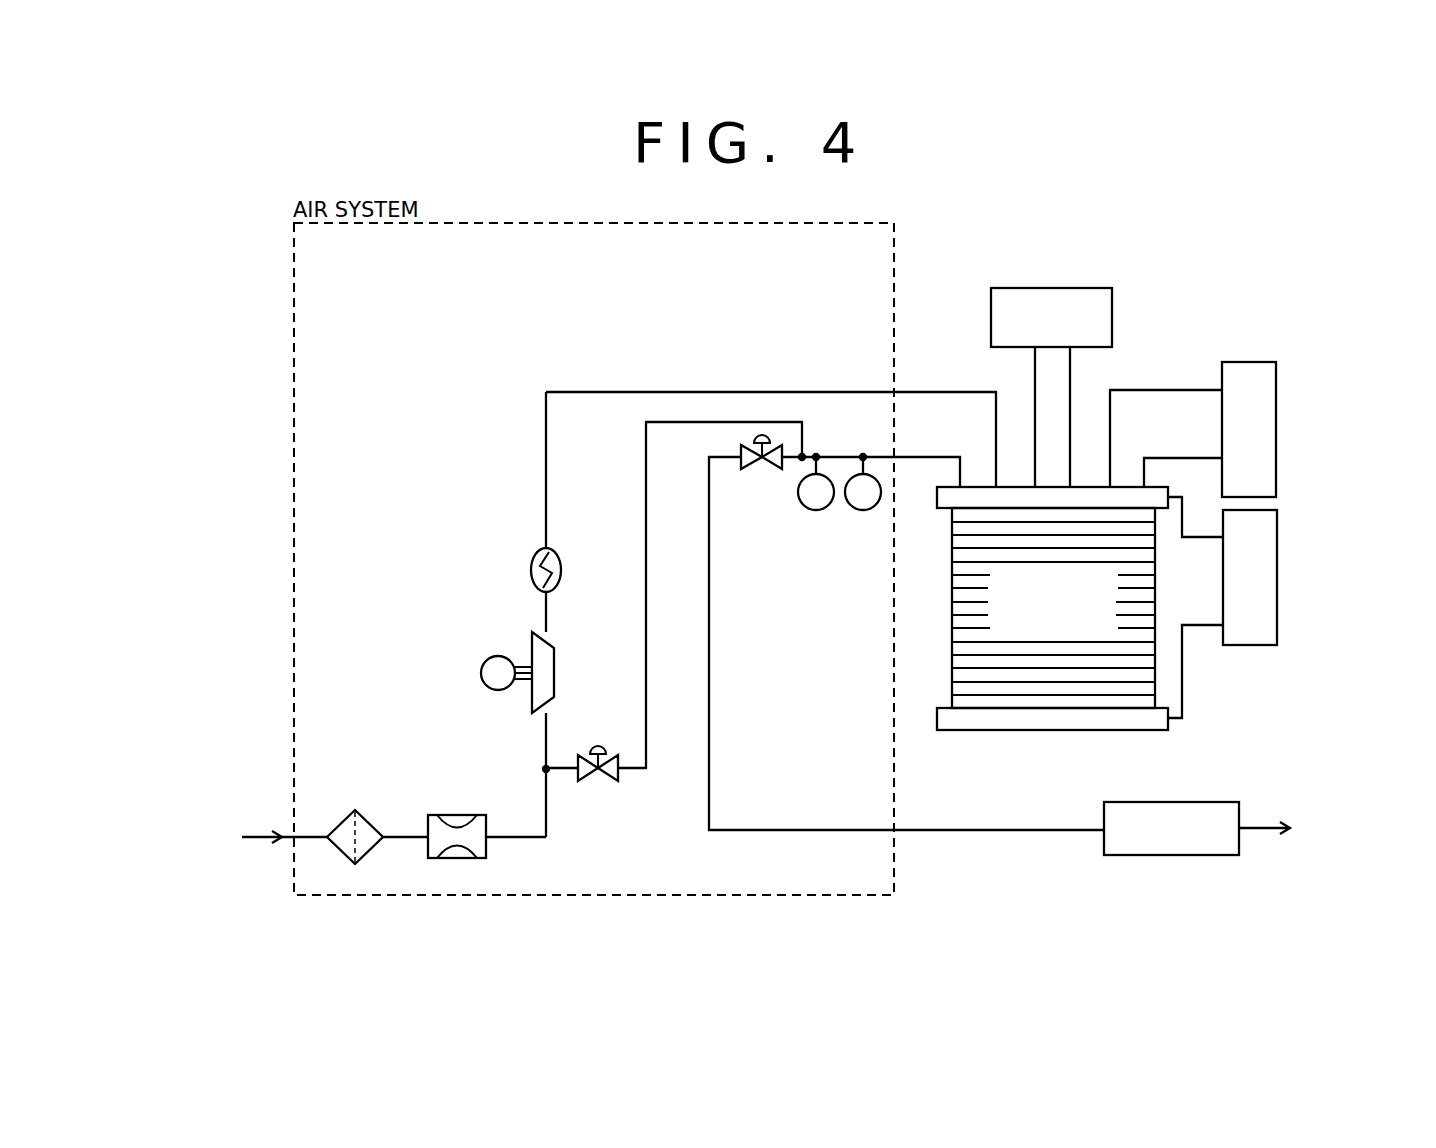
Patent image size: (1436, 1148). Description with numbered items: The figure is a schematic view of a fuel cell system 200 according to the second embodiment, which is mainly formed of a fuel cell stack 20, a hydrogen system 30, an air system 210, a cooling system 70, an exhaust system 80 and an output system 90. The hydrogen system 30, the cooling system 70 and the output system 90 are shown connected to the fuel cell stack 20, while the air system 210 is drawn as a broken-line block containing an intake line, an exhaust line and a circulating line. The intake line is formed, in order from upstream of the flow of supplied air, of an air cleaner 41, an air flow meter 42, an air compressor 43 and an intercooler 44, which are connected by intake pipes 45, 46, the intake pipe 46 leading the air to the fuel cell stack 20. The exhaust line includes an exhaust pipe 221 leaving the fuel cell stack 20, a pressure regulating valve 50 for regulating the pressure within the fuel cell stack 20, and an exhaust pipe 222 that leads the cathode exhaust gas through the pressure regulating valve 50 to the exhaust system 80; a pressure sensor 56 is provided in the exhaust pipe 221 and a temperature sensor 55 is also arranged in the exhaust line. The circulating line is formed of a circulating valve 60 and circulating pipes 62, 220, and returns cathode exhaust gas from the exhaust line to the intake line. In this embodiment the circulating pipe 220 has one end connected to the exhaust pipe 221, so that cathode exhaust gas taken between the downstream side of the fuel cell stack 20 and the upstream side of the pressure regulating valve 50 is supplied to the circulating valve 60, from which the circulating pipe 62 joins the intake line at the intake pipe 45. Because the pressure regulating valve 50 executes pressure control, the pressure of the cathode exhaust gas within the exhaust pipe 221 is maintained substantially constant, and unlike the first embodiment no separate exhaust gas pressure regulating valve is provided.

The fuel cell system 200 is at (1316, 289).
The air system 210 is at (594, 546).
The fuel cell stack 20 is at (974, 750).
The hydrogen system 30 is at (1243, 360).
The air cleaner 41 is at (368, 821).
The air flow meter 42 is at (440, 814).
The air compressor 43 is at (530, 648).
The intercooler 44 is at (531, 572).
The intake pipe 45 is at (545, 761).
The intake pipe 46 is at (820, 390).
The pressure regulating valve 50 is at (765, 470).
The temperature sensor 55 is at (863, 510).
The pressure sensor 56 is at (816, 510).
The circulating valve 60 is at (591, 756).
The circulating pipe 62 is at (566, 773).
The cooling system 70 is at (1052, 286).
The exhaust system 80 is at (1156, 801).
The output system 90 is at (1250, 646).
The circulating pipe 220 is at (630, 773).
The exhaust pipe 221 is at (868, 455).
The exhaust pipe 222 is at (712, 703).